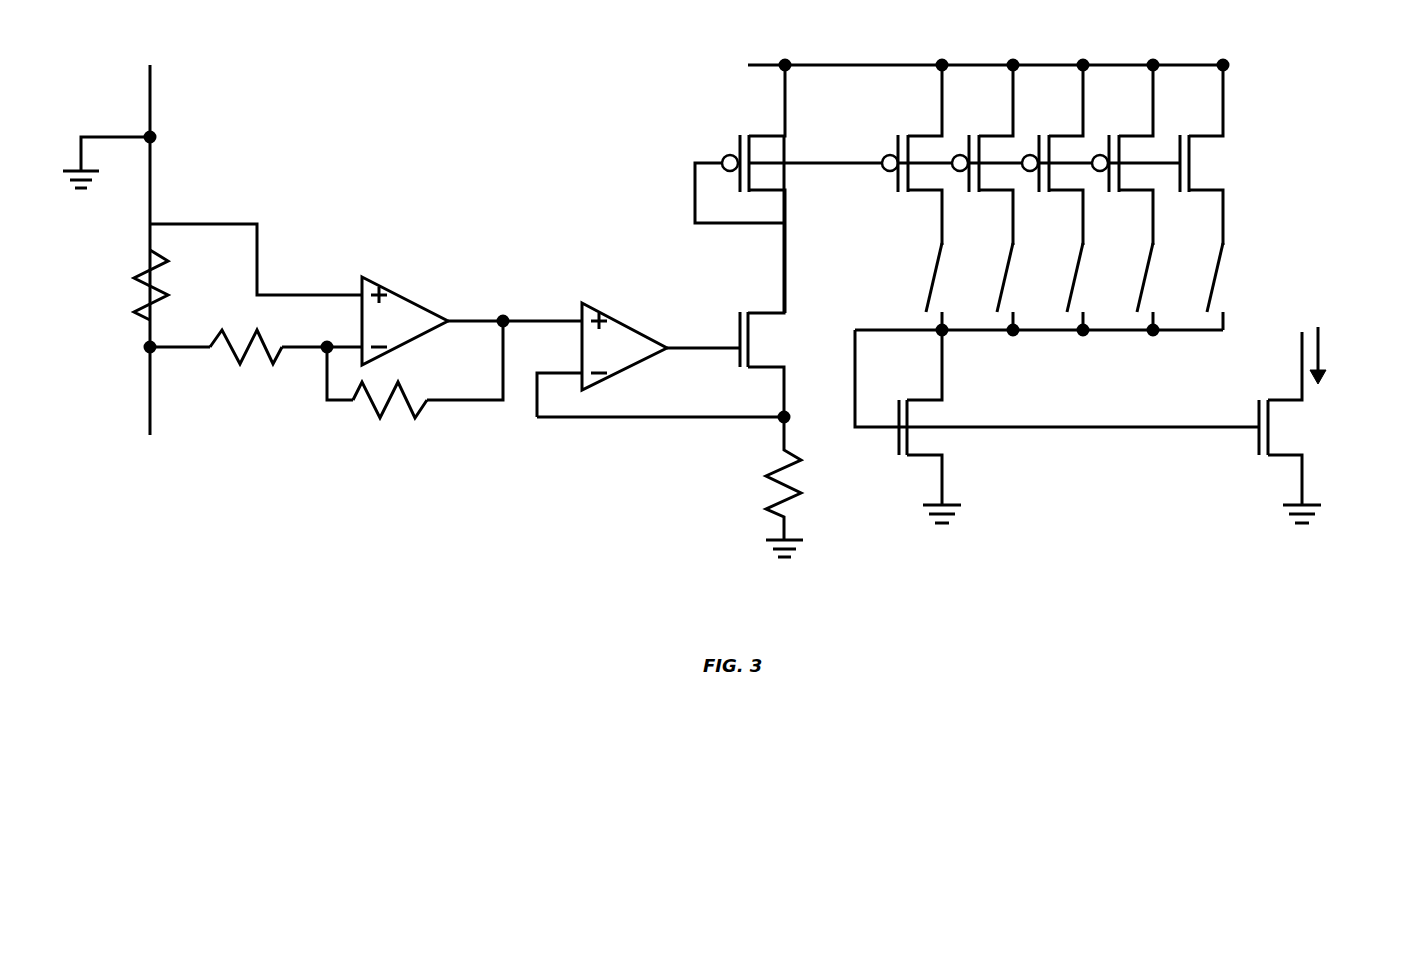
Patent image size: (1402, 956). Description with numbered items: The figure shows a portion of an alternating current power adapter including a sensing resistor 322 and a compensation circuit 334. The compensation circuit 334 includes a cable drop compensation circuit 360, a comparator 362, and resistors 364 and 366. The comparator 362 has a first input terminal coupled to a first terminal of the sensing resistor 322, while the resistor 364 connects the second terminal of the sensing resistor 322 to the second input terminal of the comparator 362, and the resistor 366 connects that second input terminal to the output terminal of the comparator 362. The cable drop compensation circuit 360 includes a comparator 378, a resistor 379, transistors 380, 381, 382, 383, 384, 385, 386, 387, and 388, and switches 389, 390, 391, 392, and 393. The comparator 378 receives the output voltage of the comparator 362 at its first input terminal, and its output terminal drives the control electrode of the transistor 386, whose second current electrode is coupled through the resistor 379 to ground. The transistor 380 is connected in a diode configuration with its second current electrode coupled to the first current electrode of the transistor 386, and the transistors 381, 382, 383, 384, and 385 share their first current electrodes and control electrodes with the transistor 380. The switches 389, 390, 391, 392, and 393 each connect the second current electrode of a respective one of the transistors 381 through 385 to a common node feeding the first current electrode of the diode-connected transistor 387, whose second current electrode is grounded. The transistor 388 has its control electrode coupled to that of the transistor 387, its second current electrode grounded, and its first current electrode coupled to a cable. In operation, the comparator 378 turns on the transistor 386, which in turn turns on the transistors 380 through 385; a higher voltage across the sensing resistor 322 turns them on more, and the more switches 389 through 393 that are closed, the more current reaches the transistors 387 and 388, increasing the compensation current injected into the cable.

The sensing resistor 322 is at (148, 268).
The compensation circuit 334 is at (470, 473).
The cable drop compensation circuit 360 is at (1286, 242).
The comparator 362 is at (397, 291).
The resistor 364 is at (268, 345).
The resistor 366 is at (405, 398).
The comparator 378 is at (615, 317).
The resistor 379 is at (781, 462).
The transistor 380 is at (755, 135).
The transistor 381 is at (914, 135).
The transistor 382 is at (1001, 135).
The transistor 383 is at (1071, 135).
The transistor 384 is at (1141, 135).
The transistor 385 is at (1211, 135).
The transistor 386 is at (753, 312).
The transistor 387 is at (943, 382).
The transistor 388 is at (1286, 399).
The switch 389 is at (935, 278).
The switch 390 is at (1005, 278).
The switch 391 is at (1075, 278).
The switch 392 is at (1145, 272).
The switch 393 is at (1220, 278).